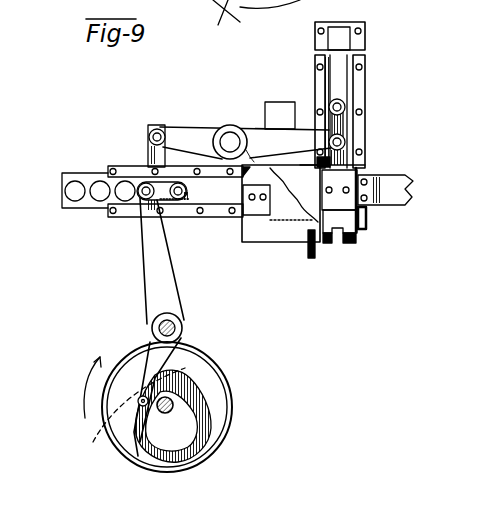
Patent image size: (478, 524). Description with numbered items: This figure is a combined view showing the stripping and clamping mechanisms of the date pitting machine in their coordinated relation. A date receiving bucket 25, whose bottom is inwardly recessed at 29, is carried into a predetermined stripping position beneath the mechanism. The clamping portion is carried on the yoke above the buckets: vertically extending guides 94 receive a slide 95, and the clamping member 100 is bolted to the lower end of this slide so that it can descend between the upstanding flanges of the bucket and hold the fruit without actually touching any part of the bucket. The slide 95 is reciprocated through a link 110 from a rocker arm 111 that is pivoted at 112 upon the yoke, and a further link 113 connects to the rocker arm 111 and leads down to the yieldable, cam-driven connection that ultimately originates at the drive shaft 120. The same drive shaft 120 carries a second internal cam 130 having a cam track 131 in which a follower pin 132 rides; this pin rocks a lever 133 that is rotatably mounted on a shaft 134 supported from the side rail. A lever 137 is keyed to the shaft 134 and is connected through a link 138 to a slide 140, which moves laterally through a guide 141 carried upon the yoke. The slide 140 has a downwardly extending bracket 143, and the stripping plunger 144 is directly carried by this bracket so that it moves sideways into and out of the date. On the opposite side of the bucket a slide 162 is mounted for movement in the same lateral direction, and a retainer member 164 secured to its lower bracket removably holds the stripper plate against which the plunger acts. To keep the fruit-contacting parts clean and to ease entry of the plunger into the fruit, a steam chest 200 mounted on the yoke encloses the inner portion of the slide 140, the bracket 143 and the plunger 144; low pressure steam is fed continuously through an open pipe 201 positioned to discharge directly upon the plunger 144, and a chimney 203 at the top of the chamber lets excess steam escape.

The date receiving bucket 25 is at (352, 232).
The inwardly recessed bucket bottom 29 is at (340, 240).
The vertically extending guides 94 is at (366, 49).
The slide 95 is at (345, 84).
The clamping member 100 is at (356, 174).
The link 110 is at (347, 127).
The rocker arm 111 is at (186, 135).
The pivot 112 is at (230, 138).
The link 113 is at (150, 153).
The drive shaft 120 is at (173, 407).
The second internal cam 130 is at (216, 381).
The cam track 131 is at (152, 452).
The follower pin 132 is at (100, 438).
The lever 133 is at (152, 358).
The shaft 134 is at (183, 328).
The lever 137 is at (155, 287).
The link 138 is at (158, 212).
The slide 140 is at (88, 175).
The guide 141 is at (120, 218).
The bracket 143 is at (245, 228).
The stripping plunger 144 is at (297, 223).
The slide 162 is at (412, 181).
The retainer member 164 is at (364, 218).
The steam chest 200 is at (254, 237).
The open pipe 201 is at (312, 259).
The chimney 203 is at (280, 98).